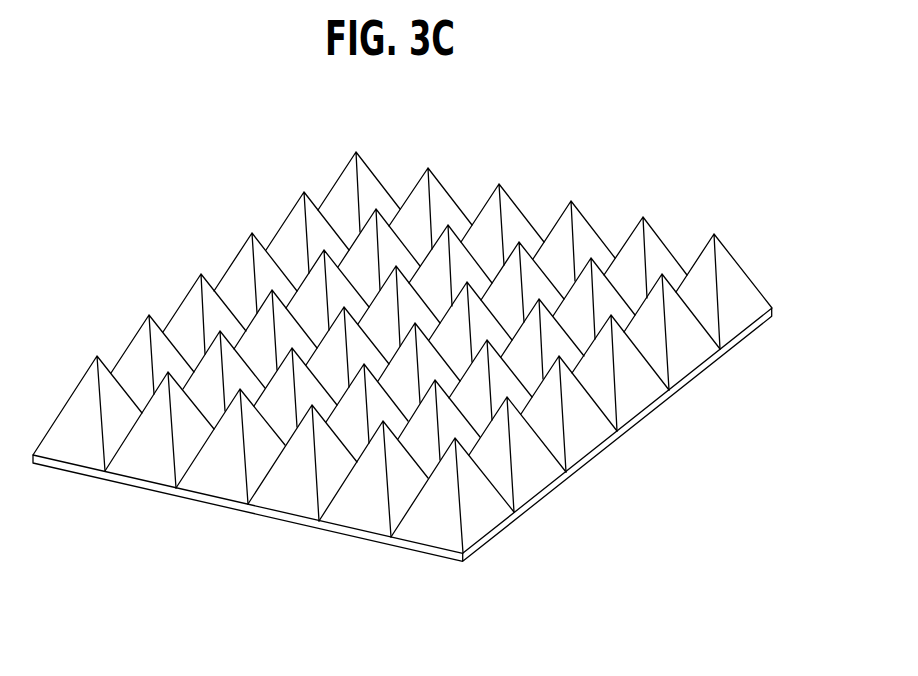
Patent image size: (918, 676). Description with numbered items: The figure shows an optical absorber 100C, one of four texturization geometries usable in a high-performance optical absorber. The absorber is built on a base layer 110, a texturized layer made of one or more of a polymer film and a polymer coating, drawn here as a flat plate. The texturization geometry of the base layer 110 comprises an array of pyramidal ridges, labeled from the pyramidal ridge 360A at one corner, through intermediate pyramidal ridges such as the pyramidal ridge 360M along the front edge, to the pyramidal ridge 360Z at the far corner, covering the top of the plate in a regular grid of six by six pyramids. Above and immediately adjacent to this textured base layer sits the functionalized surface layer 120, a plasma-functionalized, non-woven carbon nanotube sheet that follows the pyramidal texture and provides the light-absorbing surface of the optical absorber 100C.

The optical absorber 100C is at (582, 655).
The base layer 110 is at (581, 466).
The functionalized surface layer 120 is at (422, 367).
The pyramidal ridge 360A is at (77, 433).
The pyramidal ridge 360M is at (297, 492).
The pyramidal ridge 360Z is at (737, 305).